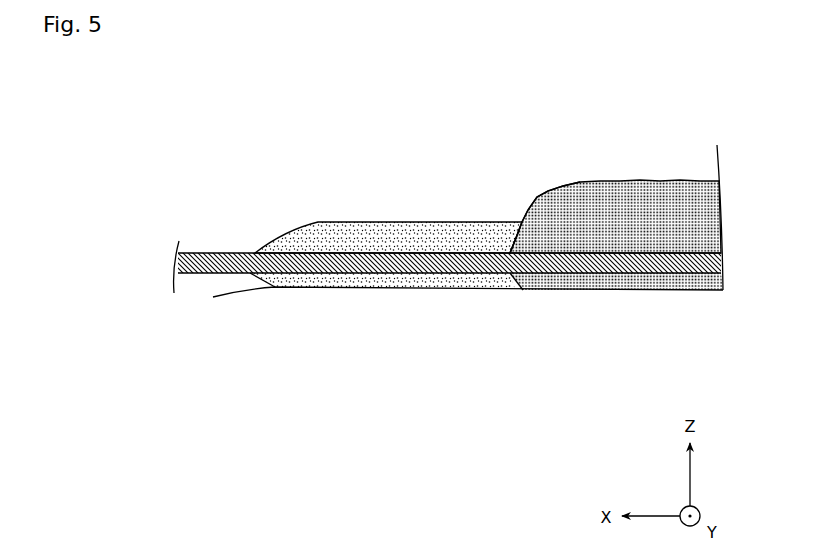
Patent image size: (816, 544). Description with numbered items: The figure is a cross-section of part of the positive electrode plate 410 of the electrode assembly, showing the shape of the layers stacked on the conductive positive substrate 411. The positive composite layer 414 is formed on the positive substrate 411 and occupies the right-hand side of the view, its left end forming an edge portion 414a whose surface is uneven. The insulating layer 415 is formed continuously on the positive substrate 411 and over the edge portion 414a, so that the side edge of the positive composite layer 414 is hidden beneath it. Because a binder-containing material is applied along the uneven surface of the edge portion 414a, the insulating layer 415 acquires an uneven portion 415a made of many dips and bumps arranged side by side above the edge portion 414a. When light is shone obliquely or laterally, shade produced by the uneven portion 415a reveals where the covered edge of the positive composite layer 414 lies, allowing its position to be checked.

The positive electrode plate 410 is at (183, 150).
The positive substrate 411 is at (201, 251).
The positive composite layer 414 is at (678, 207).
The edge portion 414a is at (513, 231).
The insulating layer 415 is at (310, 232).
The uneven portion 415a is at (532, 191).